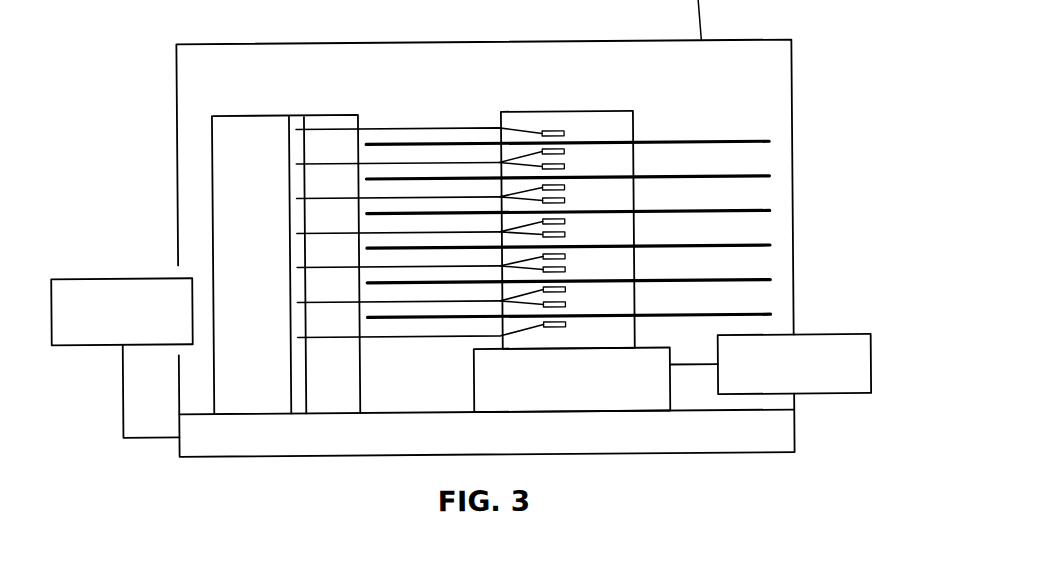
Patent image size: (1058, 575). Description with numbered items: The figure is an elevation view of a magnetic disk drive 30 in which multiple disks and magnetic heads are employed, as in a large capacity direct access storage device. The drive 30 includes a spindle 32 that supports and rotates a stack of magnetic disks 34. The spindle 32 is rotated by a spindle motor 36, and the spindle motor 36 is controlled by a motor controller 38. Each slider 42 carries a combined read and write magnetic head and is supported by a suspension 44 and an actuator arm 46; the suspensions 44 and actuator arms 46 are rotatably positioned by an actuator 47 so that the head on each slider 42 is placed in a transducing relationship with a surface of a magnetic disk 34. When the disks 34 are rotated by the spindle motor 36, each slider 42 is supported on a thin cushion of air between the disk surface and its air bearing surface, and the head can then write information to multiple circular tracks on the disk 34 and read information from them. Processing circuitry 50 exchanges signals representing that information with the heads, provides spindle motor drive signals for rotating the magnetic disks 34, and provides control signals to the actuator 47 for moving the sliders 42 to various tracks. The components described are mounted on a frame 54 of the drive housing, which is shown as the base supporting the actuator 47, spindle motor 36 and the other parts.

The magnetic disk drive 30 is at (688, 107).
The spindle 32 is at (621, 112).
The magnetic disk 34 is at (770, 144).
The spindle motor 36 is at (560, 392).
The motor controller 38 is at (830, 398).
The slider 42 is at (566, 152).
The suspension 44 is at (533, 162).
The actuator arm 46 is at (472, 161).
The actuator 47 is at (242, 114).
The processing circuitry 50 is at (90, 274).
The frame 54 is at (232, 452).